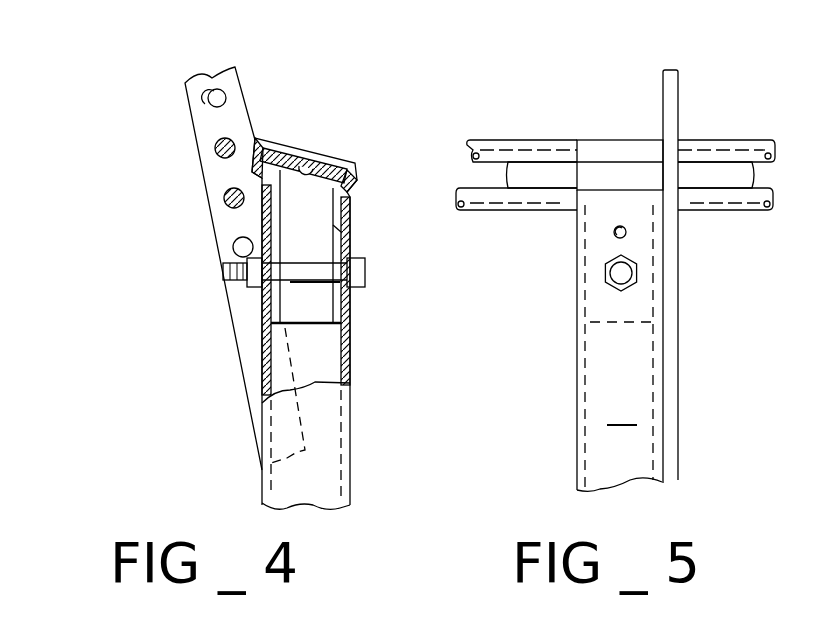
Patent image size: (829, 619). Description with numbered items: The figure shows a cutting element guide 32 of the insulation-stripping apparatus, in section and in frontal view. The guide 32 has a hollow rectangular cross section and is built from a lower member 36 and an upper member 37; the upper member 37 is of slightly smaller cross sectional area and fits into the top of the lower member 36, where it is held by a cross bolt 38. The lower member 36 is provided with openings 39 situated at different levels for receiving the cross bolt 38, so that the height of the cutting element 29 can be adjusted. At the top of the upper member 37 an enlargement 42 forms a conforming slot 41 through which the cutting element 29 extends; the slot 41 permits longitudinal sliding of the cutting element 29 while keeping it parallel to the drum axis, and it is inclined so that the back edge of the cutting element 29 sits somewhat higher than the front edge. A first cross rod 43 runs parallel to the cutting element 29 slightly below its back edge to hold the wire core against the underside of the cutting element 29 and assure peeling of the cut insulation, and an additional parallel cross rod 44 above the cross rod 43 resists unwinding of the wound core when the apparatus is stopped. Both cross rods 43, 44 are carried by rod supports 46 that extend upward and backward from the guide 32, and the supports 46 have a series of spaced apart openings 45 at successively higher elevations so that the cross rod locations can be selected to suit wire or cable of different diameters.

In FIG. 5, the cutting element 29 is at (497, 141).
In FIG. 4, the guide 32 is at (370, 183).
In FIG. 5, the guide 32 is at (566, 403).
In FIG. 4, the lower member 36 is at (350, 465).
In FIG. 5, the lower member 36 is at (621, 374).
In FIG. 4, the upper member 37 is at (290, 140).
In FIG. 5, the upper member 37 is at (602, 148).
In FIG. 4, the cross bolt 38 is at (363, 282).
In FIG. 5, the cross bolt 38 is at (607, 282).
In FIG. 4, the openings 39 is at (350, 228).
In FIG. 5, the openings 39 is at (614, 233).
In FIG. 4, the slot 41 is at (330, 160).
In FIG. 4, the enlargement 42 is at (256, 138).
In FIG. 4, the first cross rod 43 is at (224, 203).
In FIG. 5, the first cross rod 43 is at (698, 212).
In FIG. 4, the cross rod 44 is at (214, 157).
In FIG. 5, the cross rod 44 is at (542, 142).
In FIG. 4, the openings 45 is at (213, 106).
In FIG. 4, the rod supports 46 is at (192, 138).
In FIG. 5, the rod supports 46 is at (672, 305).